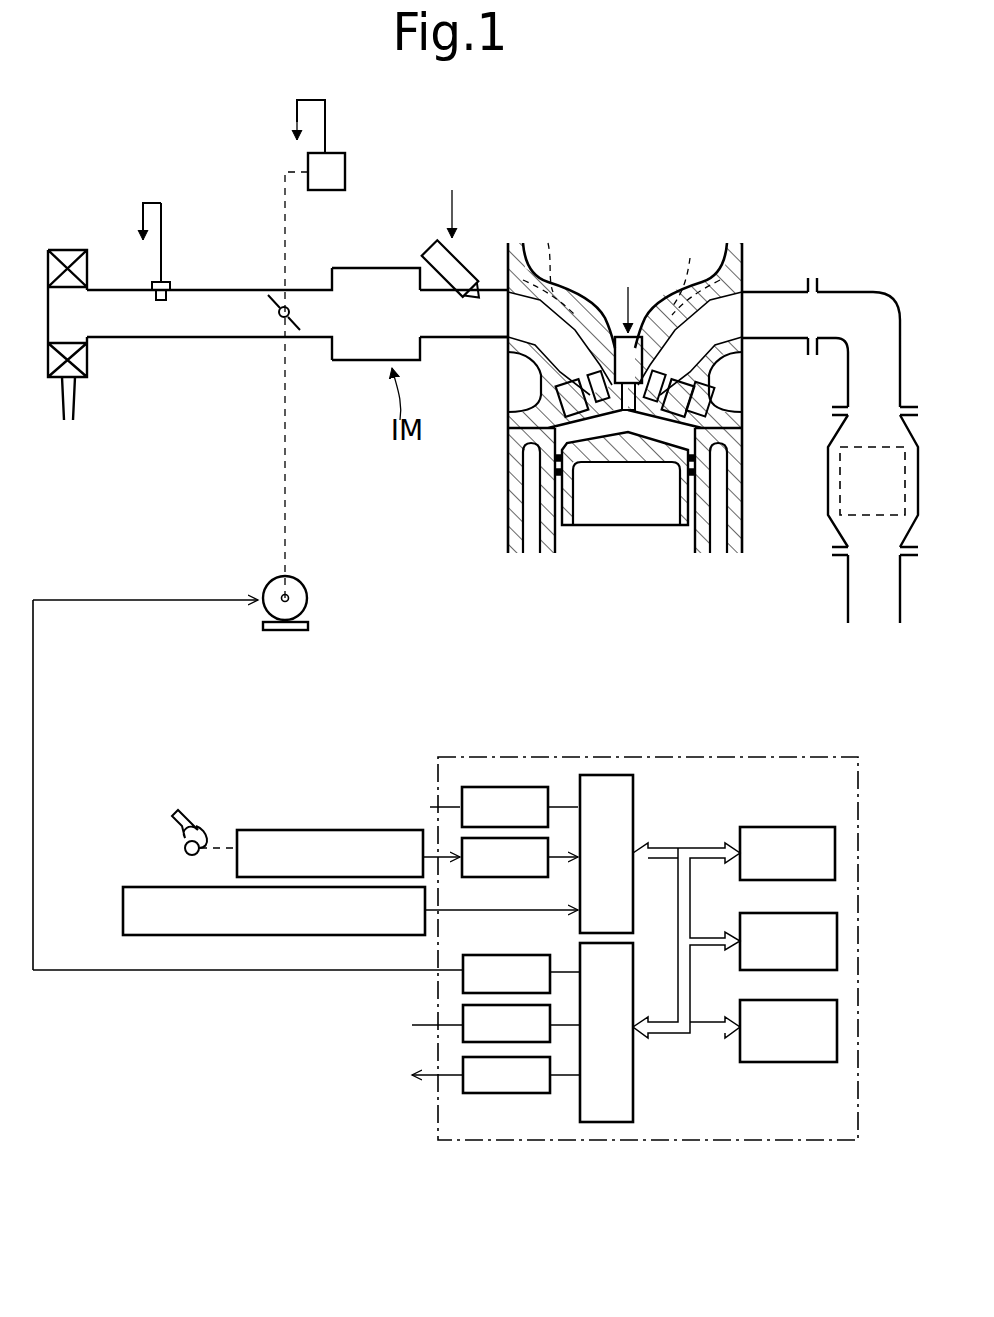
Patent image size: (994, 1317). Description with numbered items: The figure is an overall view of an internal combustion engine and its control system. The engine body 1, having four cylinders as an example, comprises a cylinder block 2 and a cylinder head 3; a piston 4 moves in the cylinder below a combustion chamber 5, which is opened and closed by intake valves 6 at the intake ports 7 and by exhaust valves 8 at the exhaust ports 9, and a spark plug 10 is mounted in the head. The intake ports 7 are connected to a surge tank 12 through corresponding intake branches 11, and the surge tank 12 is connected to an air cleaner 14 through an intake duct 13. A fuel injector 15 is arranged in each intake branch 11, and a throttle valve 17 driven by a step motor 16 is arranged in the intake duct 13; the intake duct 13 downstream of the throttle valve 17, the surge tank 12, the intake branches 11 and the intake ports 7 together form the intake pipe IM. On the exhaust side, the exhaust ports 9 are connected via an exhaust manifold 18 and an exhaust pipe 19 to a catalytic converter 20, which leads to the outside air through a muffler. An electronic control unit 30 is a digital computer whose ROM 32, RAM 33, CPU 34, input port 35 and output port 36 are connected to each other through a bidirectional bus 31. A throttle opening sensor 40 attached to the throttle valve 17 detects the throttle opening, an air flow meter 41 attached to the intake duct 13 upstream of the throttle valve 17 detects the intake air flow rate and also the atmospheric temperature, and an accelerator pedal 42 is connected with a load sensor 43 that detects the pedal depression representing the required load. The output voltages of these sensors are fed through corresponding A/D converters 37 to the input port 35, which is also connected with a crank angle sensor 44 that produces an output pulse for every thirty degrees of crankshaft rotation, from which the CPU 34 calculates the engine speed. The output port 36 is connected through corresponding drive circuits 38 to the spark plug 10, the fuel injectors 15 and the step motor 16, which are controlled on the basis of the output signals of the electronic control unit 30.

The engine body 1 is at (615, 416).
The cylinder block 2 is at (508, 527).
The cylinder head 3 is at (745, 265).
The piston 4 is at (603, 512).
The combustion chamber 5 is at (670, 432).
The intake valves 6 is at (608, 340).
The intake ports 7 is at (553, 290).
The exhaust valves 8 is at (742, 385).
The exhaust ports 9 is at (690, 274).
The spark plug 10 is at (637, 333).
The intake branches 11 is at (470, 340).
The surge tank 12 is at (392, 268).
The intake duct 13 is at (254, 290).
The air cleaner 14 is at (70, 250).
The fuel injector 15 is at (472, 270).
The step motor 16 is at (307, 598).
The throttle valve 17 is at (300, 320).
The exhaust manifold 18 is at (806, 280).
The exhaust pipe 19 is at (873, 292).
The catalytic converter 20 is at (826, 492).
The electronic control unit 30 is at (760, 752).
The bidirectional bus 31 is at (686, 847).
The ROM 32 is at (792, 827).
The RAM 33 is at (806, 915).
The CPU 34 is at (785, 1062).
The input port 35 is at (635, 803).
The output port 36 is at (636, 1096).
The A/D converters 37 is at (460, 840).
The drive circuits 38 is at (463, 1067).
The throttle opening sensor 40 is at (334, 190).
The air flow meter 41 is at (165, 282).
The accelerator pedal 42 is at (185, 838).
The load sensor 43 is at (292, 830).
The crank angle sensor 44 is at (172, 887).